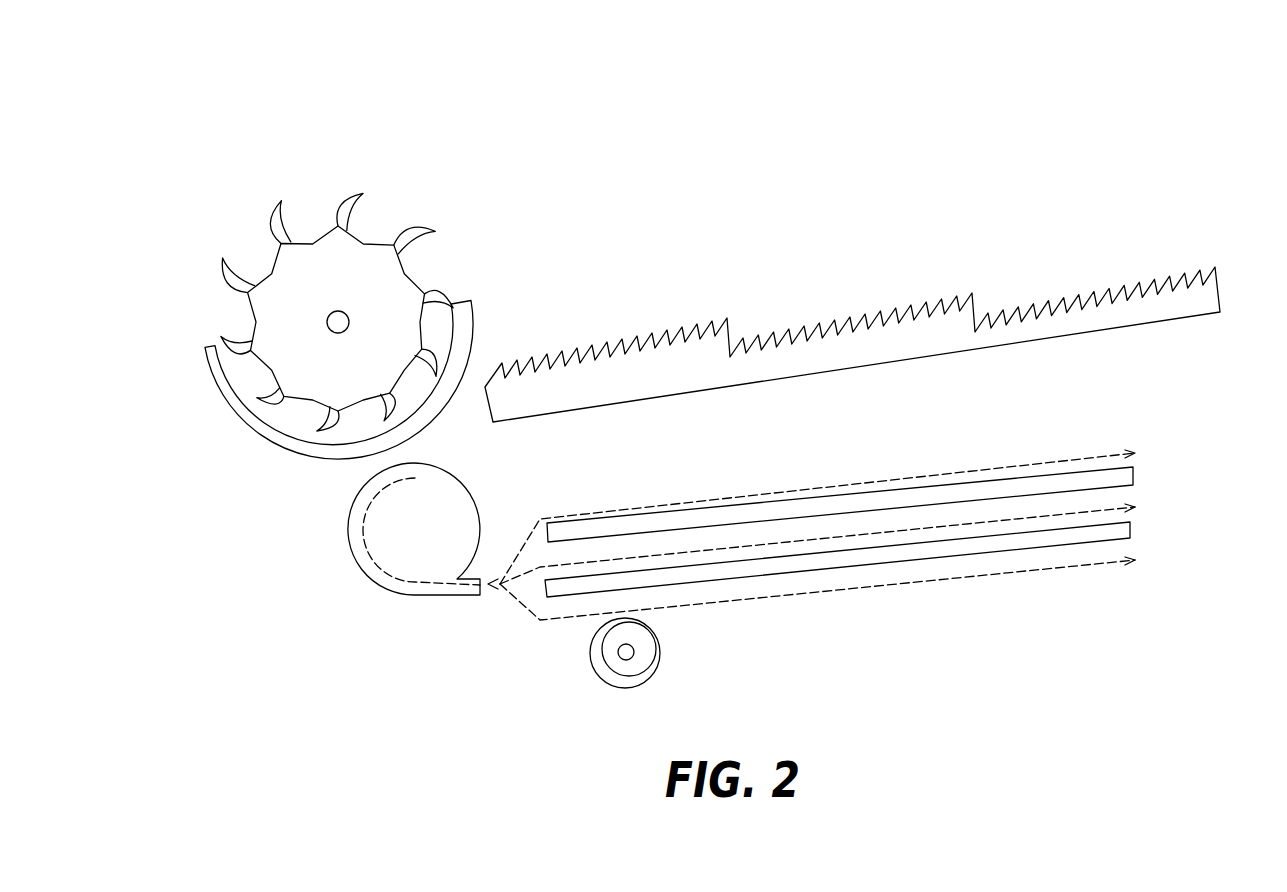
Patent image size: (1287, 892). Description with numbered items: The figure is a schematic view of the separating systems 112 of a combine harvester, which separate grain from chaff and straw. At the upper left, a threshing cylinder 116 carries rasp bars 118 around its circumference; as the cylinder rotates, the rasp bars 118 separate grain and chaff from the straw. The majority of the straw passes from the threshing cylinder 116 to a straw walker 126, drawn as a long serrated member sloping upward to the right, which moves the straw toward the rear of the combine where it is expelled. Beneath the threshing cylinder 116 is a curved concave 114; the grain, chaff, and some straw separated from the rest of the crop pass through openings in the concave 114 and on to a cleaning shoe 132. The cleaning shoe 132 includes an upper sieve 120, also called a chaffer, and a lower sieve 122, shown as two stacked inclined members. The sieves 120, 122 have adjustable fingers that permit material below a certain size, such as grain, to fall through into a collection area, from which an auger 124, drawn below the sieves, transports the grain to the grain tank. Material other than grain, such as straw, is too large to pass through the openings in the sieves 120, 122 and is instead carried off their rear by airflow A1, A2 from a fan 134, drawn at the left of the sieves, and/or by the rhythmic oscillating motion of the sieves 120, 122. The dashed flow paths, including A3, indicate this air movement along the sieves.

The separating systems 112 is at (557, 160).
The concave 114 is at (262, 434).
The threshing cylinder 116 is at (400, 262).
The rasp bars 118 is at (342, 200).
The upper sieve 120 is at (763, 503).
The lower sieve 122 is at (1133, 527).
The auger 124 is at (602, 673).
The straw walker 126 is at (686, 300).
The cleaning shoe 132 is at (399, 581).
The fan 134 is at (390, 590).
The airflow A1 is at (1040, 463).
The airflow A2 is at (1082, 510).
The third flow path A3 is at (938, 580).